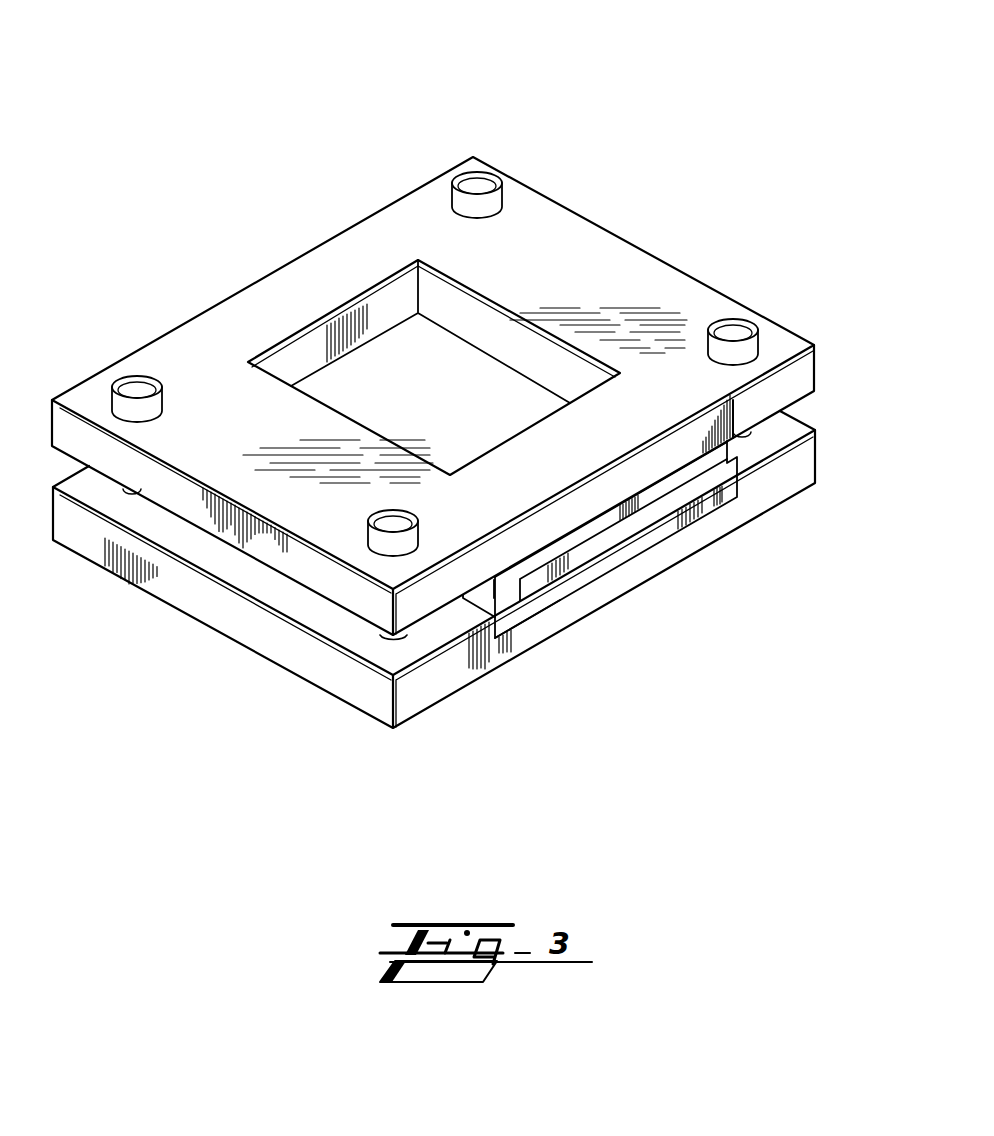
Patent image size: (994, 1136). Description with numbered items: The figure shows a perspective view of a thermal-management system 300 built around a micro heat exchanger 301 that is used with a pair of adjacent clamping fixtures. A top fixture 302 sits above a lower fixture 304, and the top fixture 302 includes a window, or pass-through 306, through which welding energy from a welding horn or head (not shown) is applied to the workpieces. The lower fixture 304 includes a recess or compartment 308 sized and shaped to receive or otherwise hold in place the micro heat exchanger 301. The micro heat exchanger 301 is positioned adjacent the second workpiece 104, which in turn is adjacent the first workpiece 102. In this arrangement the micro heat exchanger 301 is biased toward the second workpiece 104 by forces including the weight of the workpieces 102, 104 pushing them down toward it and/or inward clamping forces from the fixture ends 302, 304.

The thermal-management system 300 is at (638, 186).
The top fixture 302 is at (702, 278).
The lower fixture 304 is at (755, 523).
The pass-through 306 is at (360, 318).
The recess 308 is at (493, 627).
The micro heat exchanger 301 is at (657, 543).
The first workpiece 102 is at (527, 571).
The second workpiece 104 is at (603, 553).